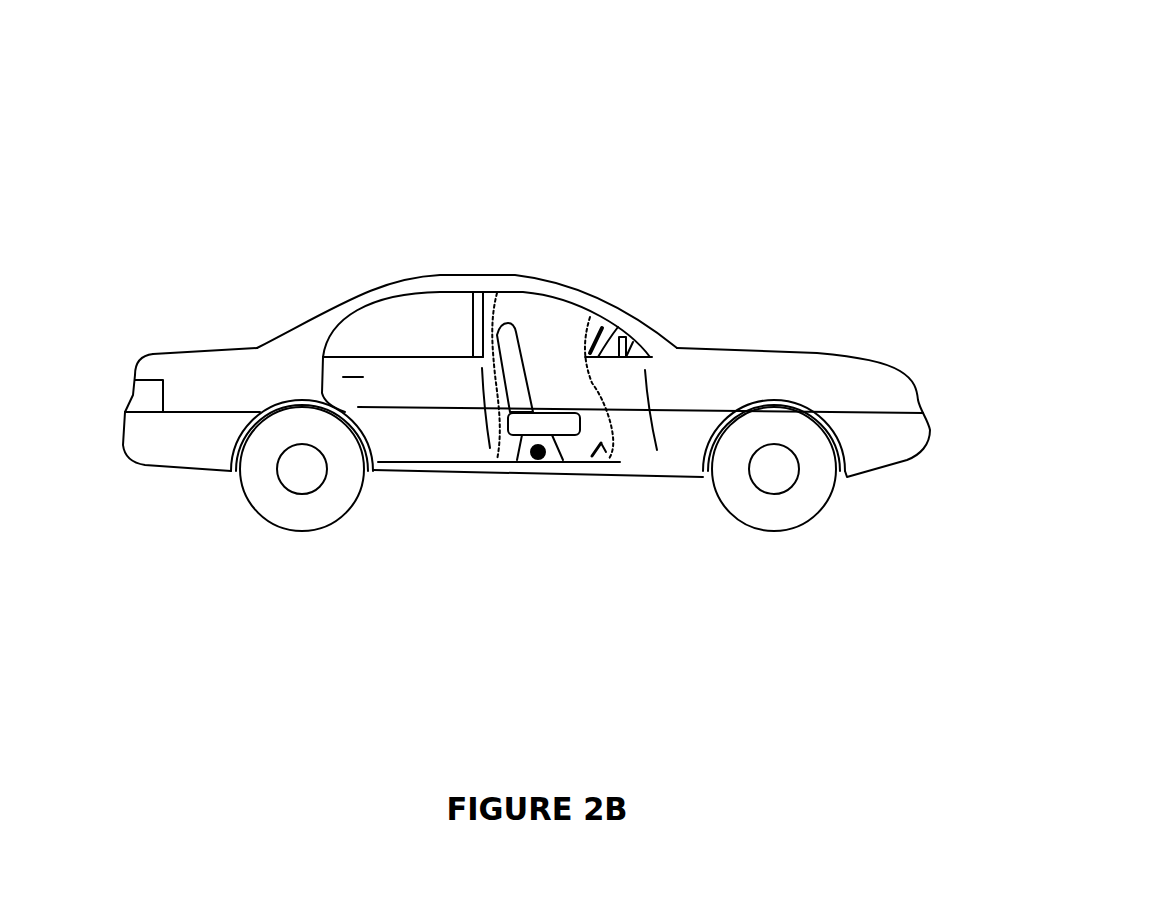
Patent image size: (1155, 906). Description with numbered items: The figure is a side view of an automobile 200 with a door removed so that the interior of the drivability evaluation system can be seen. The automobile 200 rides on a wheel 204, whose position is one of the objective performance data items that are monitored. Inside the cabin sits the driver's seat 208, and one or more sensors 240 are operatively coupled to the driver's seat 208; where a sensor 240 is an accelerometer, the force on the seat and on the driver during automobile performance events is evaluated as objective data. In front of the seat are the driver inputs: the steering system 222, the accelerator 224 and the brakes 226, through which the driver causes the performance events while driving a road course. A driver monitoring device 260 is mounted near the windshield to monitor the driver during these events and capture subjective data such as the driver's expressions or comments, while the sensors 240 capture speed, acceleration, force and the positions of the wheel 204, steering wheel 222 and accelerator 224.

The automobile 200 is at (1127, 45).
The wheel 204 is at (810, 498).
The driver's seat 208 is at (517, 325).
The steering system 222 is at (603, 327).
The accelerator 224 is at (659, 491).
The brakes 226 is at (612, 452).
The sensor 240 is at (542, 460).
The driver monitoring device 260 is at (633, 341).